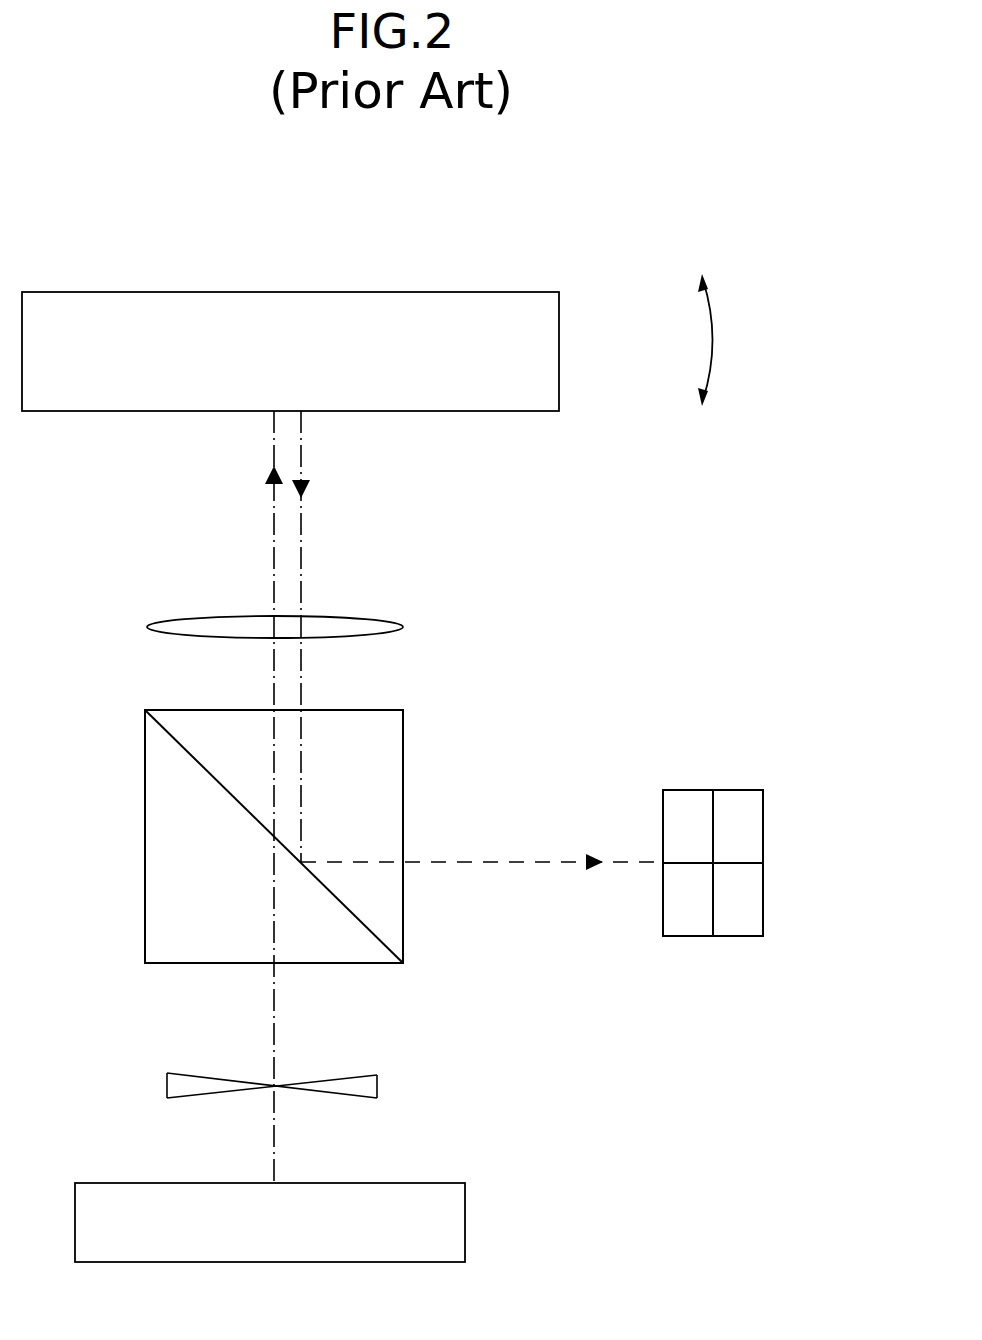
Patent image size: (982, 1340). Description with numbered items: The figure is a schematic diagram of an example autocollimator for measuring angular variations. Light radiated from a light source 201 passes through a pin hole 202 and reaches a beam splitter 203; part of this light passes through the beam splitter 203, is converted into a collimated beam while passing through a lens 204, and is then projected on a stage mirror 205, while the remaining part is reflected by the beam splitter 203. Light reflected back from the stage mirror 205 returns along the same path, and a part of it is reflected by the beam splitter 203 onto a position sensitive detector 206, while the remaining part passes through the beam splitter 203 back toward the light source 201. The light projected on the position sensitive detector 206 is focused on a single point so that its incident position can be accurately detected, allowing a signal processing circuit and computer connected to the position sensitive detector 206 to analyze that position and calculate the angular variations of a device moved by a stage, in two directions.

The light source 201 is at (465, 1222).
The pin hole 202 is at (378, 1080).
The beam splitter 203 is at (395, 738).
The lens 204 is at (397, 620).
The stage mirror 205 is at (285, 292).
The position sensitive detector 206 is at (763, 905).